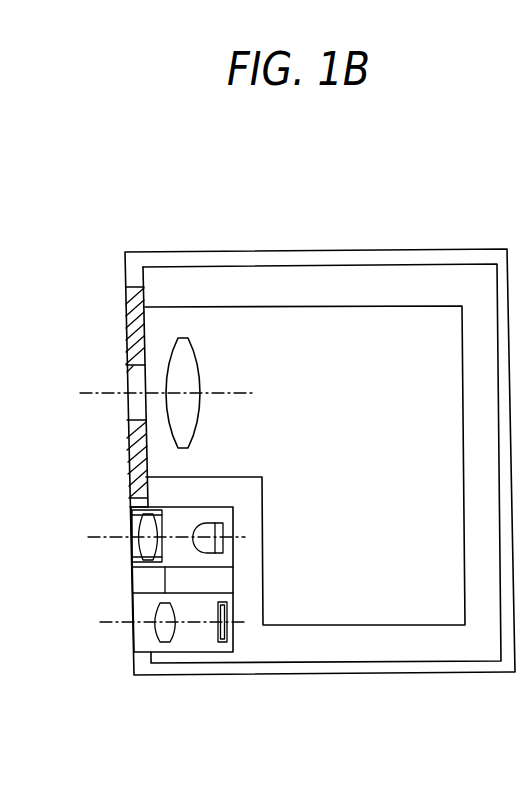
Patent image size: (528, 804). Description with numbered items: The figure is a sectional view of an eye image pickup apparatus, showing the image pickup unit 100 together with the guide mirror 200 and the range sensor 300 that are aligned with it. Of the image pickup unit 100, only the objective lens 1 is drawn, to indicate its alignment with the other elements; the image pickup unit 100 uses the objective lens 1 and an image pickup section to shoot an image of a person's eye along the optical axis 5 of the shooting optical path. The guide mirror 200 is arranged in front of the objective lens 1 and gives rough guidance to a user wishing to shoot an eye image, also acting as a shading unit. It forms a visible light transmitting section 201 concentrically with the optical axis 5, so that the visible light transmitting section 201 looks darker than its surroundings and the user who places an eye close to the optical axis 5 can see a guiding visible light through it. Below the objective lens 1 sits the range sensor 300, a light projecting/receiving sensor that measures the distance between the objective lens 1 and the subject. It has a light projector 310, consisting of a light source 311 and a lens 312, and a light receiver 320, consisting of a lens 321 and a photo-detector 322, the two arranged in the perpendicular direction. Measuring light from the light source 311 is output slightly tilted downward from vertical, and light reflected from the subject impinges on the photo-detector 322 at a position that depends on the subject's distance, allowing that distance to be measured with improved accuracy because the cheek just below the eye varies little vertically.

The image pickup unit 100 is at (305, 307).
The guide mirror 200 is at (126, 317).
The visible light transmitting section 201 is at (127, 377).
The objective lens 1 is at (195, 365).
The optical axis 5 is at (218, 393).
The range sensor 300 is at (132, 583).
The light projector 310 is at (133, 522).
The light source 311 is at (212, 527).
The lens 312 is at (158, 530).
The light receiver 320 is at (136, 636).
The lens 321 is at (176, 630).
The photo-detector 322 is at (214, 638).